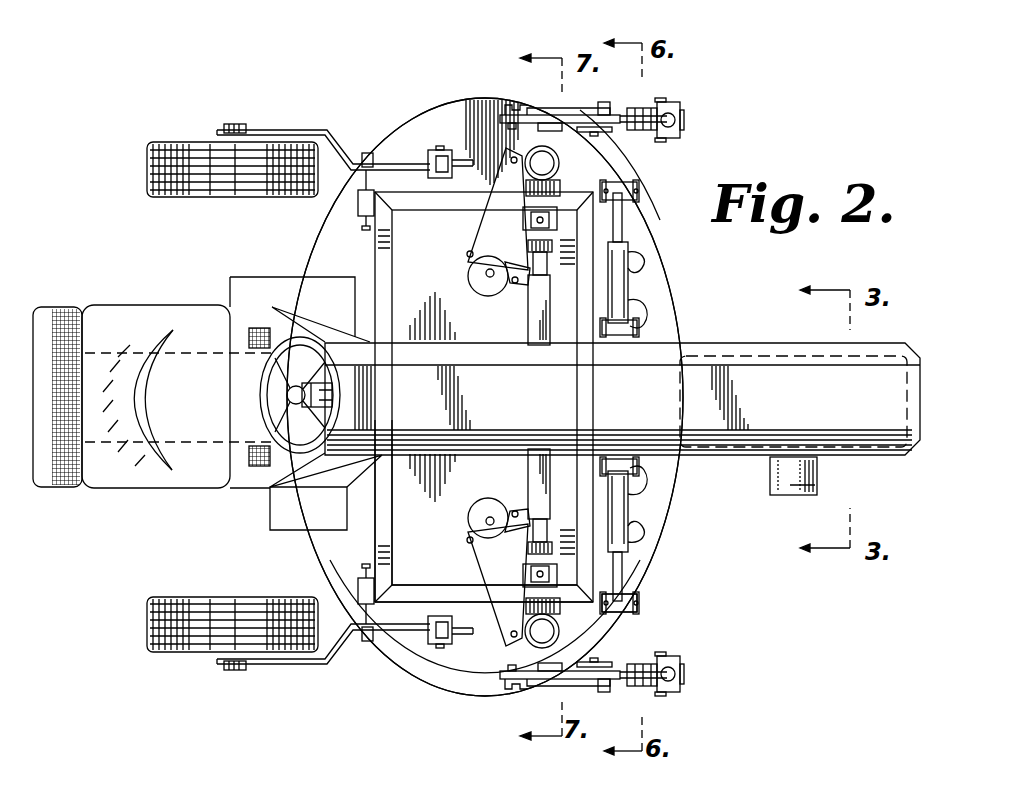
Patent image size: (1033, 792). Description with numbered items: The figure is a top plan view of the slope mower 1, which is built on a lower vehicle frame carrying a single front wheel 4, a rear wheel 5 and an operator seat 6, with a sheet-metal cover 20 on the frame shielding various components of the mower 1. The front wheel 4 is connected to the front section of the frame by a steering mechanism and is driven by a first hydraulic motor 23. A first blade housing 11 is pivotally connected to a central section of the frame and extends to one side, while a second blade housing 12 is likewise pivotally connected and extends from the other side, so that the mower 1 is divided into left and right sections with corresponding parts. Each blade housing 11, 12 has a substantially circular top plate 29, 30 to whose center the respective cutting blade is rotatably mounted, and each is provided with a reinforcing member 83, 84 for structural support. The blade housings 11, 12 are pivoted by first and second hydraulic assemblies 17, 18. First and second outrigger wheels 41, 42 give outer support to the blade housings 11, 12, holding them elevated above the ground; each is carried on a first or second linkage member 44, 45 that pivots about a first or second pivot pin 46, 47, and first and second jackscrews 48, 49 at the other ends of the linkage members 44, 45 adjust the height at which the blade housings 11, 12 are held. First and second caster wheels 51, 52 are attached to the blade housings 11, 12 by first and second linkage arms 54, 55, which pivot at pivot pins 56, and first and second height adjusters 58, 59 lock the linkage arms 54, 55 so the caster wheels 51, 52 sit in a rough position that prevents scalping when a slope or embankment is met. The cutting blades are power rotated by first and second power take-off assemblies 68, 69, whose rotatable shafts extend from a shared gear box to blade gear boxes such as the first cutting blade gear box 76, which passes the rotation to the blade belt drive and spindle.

The slope mower 1 is at (695, 262).
The front wheel 4 is at (680, 395).
The rear wheel 5 is at (208, 352).
The operator seat 6 is at (117, 312).
The first blade housing 11 is at (447, 104).
The second blade housing 12 is at (424, 684).
The first hydraulic assembly 17 is at (628, 300).
The second hydraulic assembly 18 is at (628, 500).
The cover 20 is at (786, 343).
The first hydraulic motor 23 is at (770, 490).
The top plate 29 is at (618, 180).
The top plate 30 is at (640, 592).
The first outrigger wheel 41 is at (150, 142).
The second outrigger wheel 42 is at (148, 655).
The first linkage member 44 is at (310, 130).
The second linkage member 45 is at (333, 653).
The first pivot pin 46 is at (370, 190).
The second pivot pin 47 is at (372, 614).
The first jackscrew 48 is at (448, 150).
The second jackscrew 49 is at (455, 636).
The first caster wheel 51 is at (680, 110).
The second caster wheel 52 is at (680, 674).
The first linkage arm 54 is at (552, 132).
The second linkage arm 55 is at (560, 676).
The pivot pins 56 is at (598, 104).
The first height adjuster 58 is at (506, 104).
The second height adjuster 59 is at (498, 688).
The first power take-off assembly 68 is at (528, 322).
The second power take-off assembly 69 is at (530, 472).
The first cutting blade gear box 76 is at (558, 168).
The reinforcing member 83 is at (380, 304).
The reinforcing member 84 is at (390, 482).